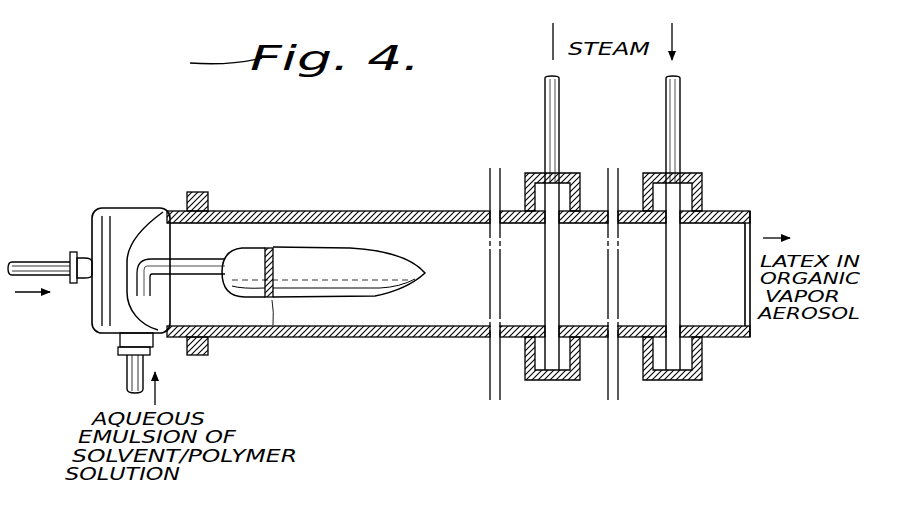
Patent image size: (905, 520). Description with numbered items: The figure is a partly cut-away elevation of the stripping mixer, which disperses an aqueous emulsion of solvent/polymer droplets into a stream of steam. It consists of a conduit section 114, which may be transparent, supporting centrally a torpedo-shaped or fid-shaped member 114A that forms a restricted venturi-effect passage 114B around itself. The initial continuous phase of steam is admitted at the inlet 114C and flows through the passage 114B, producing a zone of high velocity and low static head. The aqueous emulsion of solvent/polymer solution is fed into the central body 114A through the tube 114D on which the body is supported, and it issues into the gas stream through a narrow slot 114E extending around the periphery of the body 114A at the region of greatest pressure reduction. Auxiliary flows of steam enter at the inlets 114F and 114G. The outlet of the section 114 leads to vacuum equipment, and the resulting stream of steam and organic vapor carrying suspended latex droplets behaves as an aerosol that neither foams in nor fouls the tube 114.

The conduit section 114 is at (362, 338).
The torpedo-shaped member 114A is at (408, 268).
The venturi-effect passage 114B is at (337, 232).
The steam inlet 114C is at (57, 240).
The tube 114D is at (127, 372).
The narrow slot 114E is at (272, 337).
The auxiliary steam inlet 114F is at (552, 375).
The auxiliary steam inlet 114G is at (682, 380).